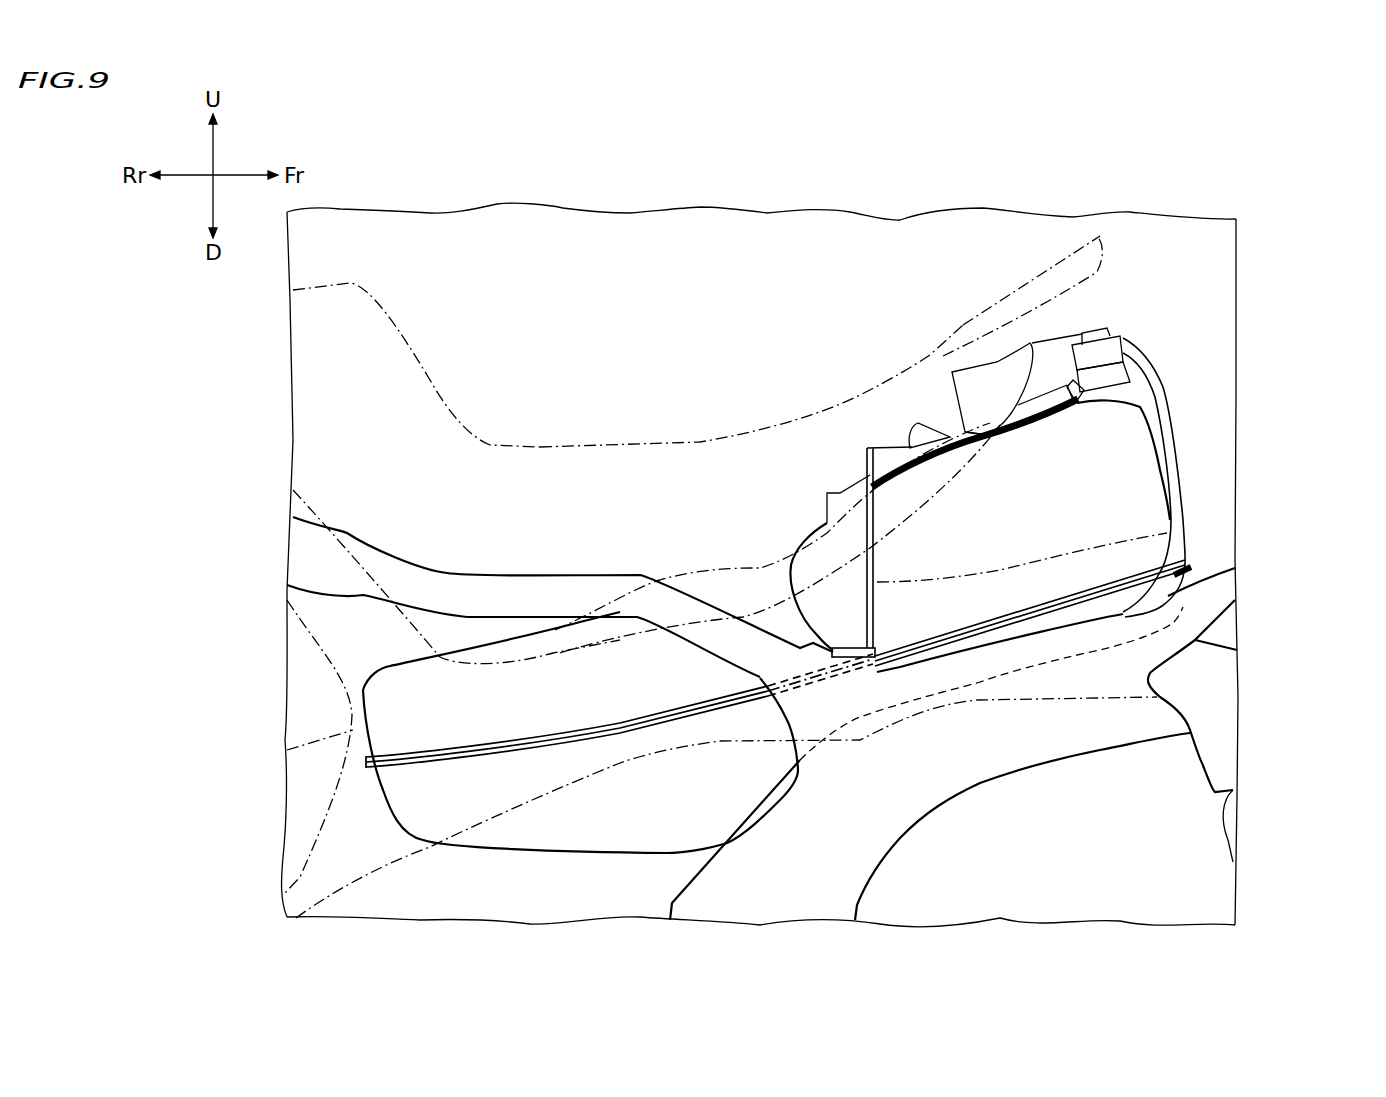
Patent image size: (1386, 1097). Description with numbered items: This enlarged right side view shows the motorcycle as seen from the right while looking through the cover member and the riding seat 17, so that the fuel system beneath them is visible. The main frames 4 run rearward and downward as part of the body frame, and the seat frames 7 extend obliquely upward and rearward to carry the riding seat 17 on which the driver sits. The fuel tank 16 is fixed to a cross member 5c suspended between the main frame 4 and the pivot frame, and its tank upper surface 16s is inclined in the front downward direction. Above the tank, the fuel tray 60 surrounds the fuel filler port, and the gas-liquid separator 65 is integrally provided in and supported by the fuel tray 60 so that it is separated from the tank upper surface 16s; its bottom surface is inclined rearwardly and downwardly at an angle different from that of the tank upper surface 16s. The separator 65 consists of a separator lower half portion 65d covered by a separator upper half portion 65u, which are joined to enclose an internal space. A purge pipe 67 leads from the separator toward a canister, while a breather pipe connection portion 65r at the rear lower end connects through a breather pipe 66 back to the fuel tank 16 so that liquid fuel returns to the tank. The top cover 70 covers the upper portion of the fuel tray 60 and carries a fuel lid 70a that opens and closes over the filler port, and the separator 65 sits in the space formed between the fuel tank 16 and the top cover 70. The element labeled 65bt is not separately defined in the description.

The main frames 4 is at (1060, 733).
The cross member 5c is at (840, 507).
The seat frames 7 is at (540, 590).
The fuel tank 16 is at (1097, 523).
The tank upper surface 16s is at (1127, 400).
The riding seat 17 is at (648, 445).
The fuel tray 60 is at (968, 368).
The gas-liquid separator 65 is at (1228, 327).
The separator upper half portion 65u is at (1115, 350).
The separator lower half portion 65d is at (1115, 373).
The connector bottom 65bt is at (987, 395).
The breather pipe connection portion 65r is at (1082, 403).
The breather pipe 66 is at (1045, 413).
The purge pipe 67 is at (1170, 442).
The top cover 70 is at (1098, 235).
The fuel lid 70a is at (1027, 282).